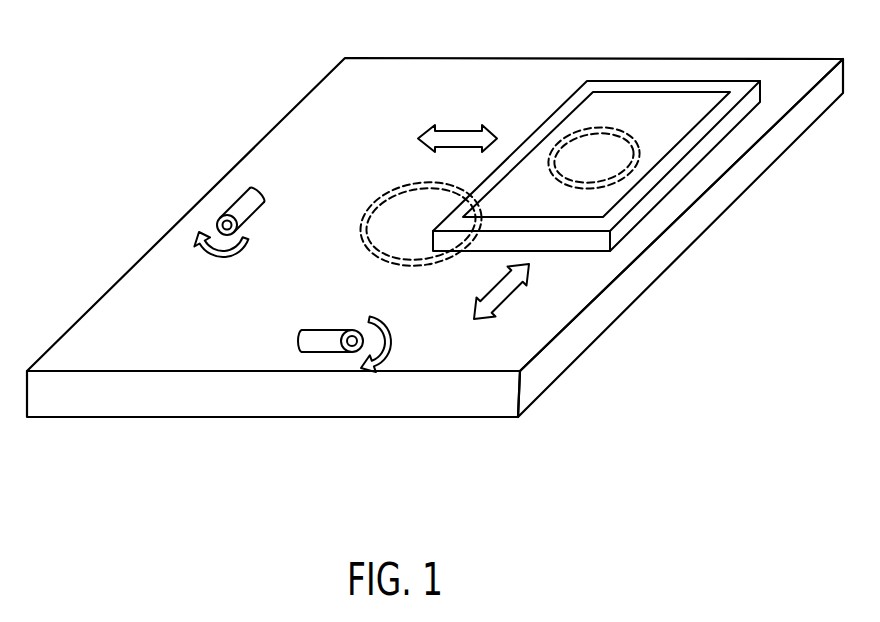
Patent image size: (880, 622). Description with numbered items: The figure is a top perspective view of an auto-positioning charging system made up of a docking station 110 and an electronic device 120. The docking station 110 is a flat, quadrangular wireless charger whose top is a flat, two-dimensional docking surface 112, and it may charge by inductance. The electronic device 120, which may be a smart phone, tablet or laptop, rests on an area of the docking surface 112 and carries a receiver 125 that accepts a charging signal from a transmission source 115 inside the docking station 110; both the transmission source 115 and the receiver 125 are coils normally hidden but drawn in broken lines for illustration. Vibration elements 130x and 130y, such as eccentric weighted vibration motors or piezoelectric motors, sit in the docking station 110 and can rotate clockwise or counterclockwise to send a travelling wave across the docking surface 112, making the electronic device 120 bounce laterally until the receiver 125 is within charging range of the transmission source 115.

The docking station 110 is at (435, 219).
The docking surface 112 is at (475, 77).
The transmission source 115 is at (395, 192).
The electronic device 120 is at (596, 166).
The receiver 125 is at (643, 142).
The vibration element 130x is at (267, 203).
The vibration element 130y is at (315, 330).